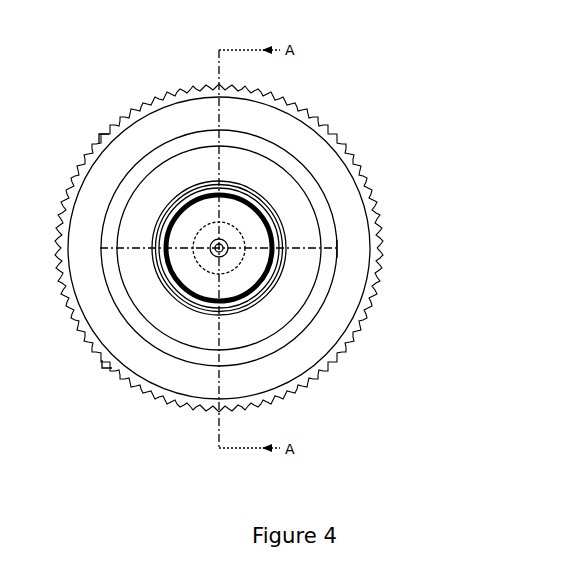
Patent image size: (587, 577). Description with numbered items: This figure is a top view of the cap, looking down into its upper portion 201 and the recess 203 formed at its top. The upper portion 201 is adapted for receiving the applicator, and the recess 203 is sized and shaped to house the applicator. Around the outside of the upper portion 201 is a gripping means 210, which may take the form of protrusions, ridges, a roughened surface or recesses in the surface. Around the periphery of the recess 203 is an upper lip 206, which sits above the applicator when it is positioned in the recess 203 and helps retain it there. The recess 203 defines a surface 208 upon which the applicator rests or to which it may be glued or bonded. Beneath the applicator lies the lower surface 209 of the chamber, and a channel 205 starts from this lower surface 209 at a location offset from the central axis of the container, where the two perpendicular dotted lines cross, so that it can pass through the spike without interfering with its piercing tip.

The upper portion 201 is at (392, 400).
The recess 203 is at (172, 283).
The channel 205 is at (222, 242).
The upper lip 206 is at (333, 215).
The surface 208 is at (297, 283).
The lower surface 209 is at (214, 262).
The gripping means 210 is at (333, 132).